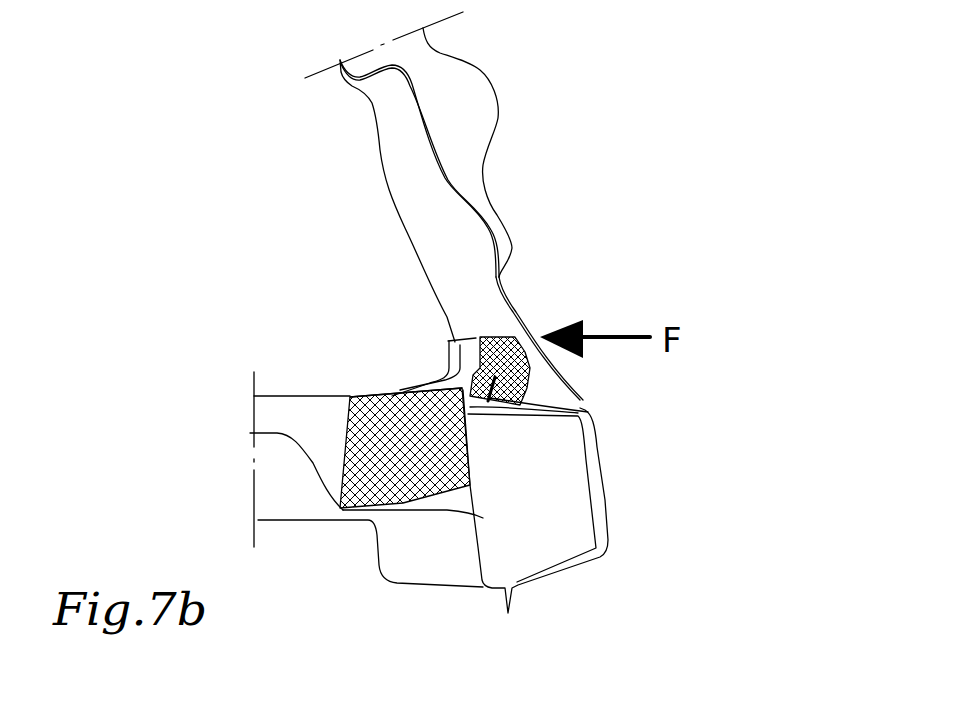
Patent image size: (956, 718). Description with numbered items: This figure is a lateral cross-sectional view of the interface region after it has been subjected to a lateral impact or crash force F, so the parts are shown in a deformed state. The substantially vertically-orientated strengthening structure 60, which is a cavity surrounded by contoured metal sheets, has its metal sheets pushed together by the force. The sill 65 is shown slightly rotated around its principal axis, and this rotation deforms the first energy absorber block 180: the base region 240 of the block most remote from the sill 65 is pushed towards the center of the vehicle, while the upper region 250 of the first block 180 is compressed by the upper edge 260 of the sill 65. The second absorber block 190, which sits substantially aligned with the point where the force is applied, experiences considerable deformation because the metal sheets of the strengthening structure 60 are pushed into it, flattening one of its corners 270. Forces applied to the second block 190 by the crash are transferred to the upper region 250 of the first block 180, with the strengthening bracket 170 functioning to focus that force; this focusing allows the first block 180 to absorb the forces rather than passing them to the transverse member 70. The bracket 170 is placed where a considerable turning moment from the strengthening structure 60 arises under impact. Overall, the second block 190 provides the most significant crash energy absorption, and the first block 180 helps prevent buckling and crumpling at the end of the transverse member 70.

The strengthening structure 60 is at (405, 212).
The sill 65 is at (607, 540).
The transverse member 70 is at (298, 415).
The strengthening bracket 170 is at (450, 377).
The first energy absorber block 180 is at (387, 408).
The second absorber block 190 is at (497, 334).
The base region 240 is at (347, 498).
The upper region 250 is at (407, 393).
The upper edge 260 is at (473, 436).
The corner 270 is at (533, 345).